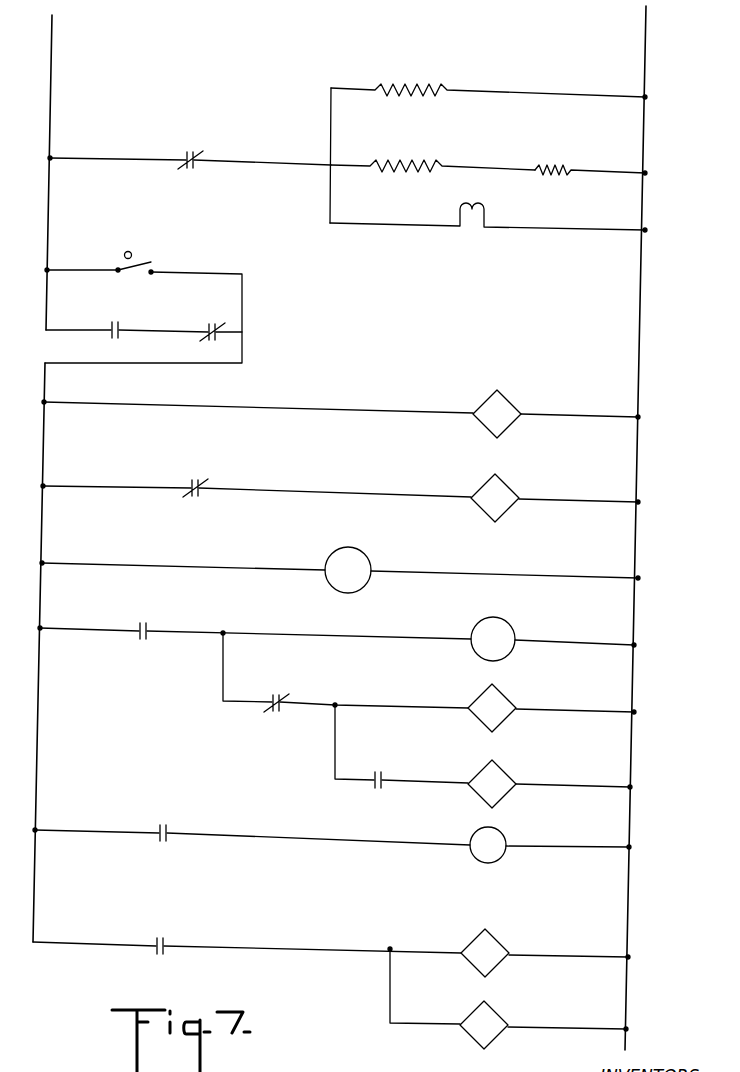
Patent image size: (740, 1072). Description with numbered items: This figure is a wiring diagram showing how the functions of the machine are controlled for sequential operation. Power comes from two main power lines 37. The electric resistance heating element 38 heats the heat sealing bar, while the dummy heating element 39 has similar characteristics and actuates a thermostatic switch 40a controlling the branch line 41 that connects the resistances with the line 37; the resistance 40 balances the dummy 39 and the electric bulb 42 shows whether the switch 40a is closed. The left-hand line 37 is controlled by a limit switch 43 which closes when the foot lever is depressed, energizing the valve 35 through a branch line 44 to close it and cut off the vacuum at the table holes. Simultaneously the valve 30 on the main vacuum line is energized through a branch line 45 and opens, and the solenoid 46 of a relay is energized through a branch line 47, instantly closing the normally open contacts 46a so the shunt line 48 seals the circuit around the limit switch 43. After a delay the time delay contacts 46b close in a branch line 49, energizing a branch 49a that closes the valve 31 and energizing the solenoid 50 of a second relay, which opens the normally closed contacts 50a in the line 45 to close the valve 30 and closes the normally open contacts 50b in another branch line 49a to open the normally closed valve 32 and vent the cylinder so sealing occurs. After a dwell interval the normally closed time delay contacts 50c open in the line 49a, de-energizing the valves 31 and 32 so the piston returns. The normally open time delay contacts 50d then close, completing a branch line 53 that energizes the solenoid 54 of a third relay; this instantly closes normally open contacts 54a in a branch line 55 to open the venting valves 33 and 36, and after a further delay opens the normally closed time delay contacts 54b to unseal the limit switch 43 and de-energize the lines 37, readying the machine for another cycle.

The main power lines 37 is at (51, 60).
The electric resistance heating element 38 is at (424, 90).
The dummy electric resistance heating element 39 is at (406, 160).
The balancing resistance 40 is at (552, 166).
The thermostatic switch 40a is at (190, 148).
The branch line 41 is at (74, 160).
The electric bulb 42 is at (478, 204).
The limit switch 43 is at (142, 265).
The normally open contacts 46a is at (114, 318).
The shunt line 48 is at (186, 302).
The normally closed time delay contacts 54b is at (214, 320).
The branch line 44 is at (366, 410).
The valve 35 is at (504, 408).
The branch line 45 is at (313, 490).
The normally closed contacts 50a is at (196, 476).
The valve 30 is at (494, 490).
The branch line 47 is at (238, 563).
The relay solenoid 46 is at (358, 560).
The branch line 49 is at (341, 633).
The time delay normally open contacts 46b is at (142, 620).
The relay solenoid 50 is at (498, 628).
The branch line 49a is at (313, 700).
The normally closed time delay contacts 50c is at (276, 688).
The valve 31 is at (500, 700).
The normally open contacts 50b is at (380, 768).
The normally closed valve 32 is at (497, 776).
The branch line 53 is at (318, 840).
The normally open time delay contacts 50d is at (160, 845).
The relay solenoid 54 is at (492, 852).
The branch line 55 is at (318, 946).
The normally open contacts 54a is at (160, 932).
The solenoid actuated valve 33 is at (494, 948).
The solenoid actuated valve 36 is at (490, 1020).